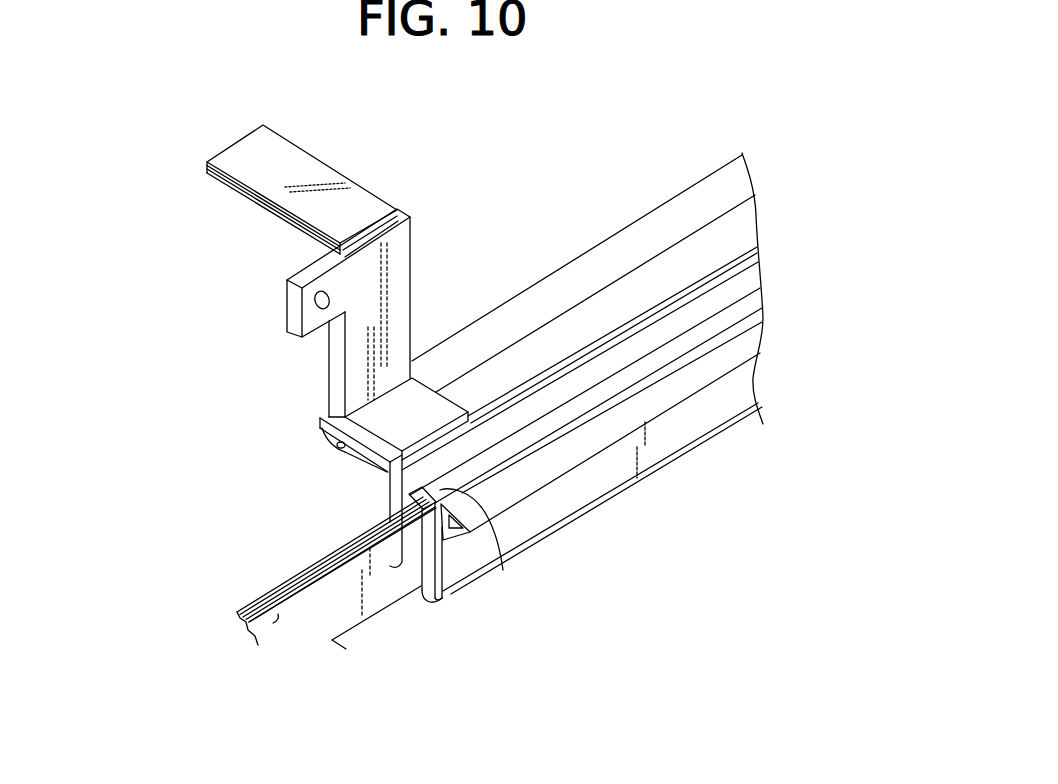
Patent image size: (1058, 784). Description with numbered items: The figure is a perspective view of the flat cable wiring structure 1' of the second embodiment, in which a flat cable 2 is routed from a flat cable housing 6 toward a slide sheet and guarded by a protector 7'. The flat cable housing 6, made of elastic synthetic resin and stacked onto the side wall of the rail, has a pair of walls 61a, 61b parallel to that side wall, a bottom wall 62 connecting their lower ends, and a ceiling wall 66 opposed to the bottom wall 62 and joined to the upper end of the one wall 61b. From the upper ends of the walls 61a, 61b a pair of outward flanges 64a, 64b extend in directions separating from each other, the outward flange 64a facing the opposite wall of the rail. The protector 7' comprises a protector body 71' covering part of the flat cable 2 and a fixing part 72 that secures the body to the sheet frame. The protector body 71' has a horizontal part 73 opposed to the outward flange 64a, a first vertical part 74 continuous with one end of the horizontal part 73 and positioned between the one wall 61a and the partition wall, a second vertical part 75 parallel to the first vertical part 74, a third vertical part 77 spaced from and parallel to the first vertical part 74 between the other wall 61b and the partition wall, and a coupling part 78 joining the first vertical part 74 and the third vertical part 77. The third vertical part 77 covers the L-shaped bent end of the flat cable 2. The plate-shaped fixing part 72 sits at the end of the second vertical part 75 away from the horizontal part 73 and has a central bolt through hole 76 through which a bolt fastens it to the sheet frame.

The flat cable wiring structure 1' is at (582, 332).
The flat cable 2 is at (297, 167).
The flat cable housing 6 is at (318, 431).
The protector 7' is at (297, 364).
The wall 61a is at (380, 516).
The wall 61b is at (446, 583).
The bottom wall 62 is at (422, 601).
The outward flange 64a is at (373, 458).
The outward flange 64b is at (488, 500).
The ceiling wall 66 is at (503, 570).
The protector body 71' is at (400, 283).
The fixing part 72 is at (300, 333).
The horizontal part 73 is at (421, 407).
The first vertical part 74 is at (380, 487).
The second vertical part 75 is at (400, 307).
The bolt through hole 76 is at (314, 300).
The third vertical part 77 is at (420, 562).
The coupling part 78 is at (421, 597).